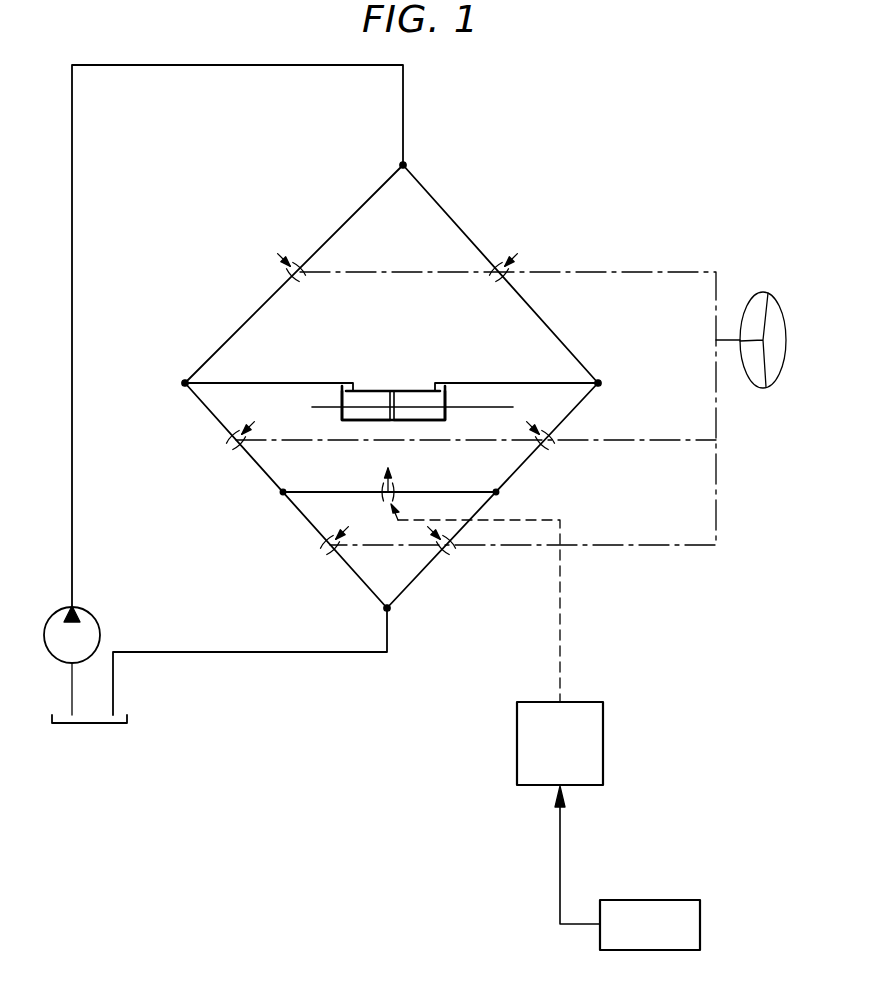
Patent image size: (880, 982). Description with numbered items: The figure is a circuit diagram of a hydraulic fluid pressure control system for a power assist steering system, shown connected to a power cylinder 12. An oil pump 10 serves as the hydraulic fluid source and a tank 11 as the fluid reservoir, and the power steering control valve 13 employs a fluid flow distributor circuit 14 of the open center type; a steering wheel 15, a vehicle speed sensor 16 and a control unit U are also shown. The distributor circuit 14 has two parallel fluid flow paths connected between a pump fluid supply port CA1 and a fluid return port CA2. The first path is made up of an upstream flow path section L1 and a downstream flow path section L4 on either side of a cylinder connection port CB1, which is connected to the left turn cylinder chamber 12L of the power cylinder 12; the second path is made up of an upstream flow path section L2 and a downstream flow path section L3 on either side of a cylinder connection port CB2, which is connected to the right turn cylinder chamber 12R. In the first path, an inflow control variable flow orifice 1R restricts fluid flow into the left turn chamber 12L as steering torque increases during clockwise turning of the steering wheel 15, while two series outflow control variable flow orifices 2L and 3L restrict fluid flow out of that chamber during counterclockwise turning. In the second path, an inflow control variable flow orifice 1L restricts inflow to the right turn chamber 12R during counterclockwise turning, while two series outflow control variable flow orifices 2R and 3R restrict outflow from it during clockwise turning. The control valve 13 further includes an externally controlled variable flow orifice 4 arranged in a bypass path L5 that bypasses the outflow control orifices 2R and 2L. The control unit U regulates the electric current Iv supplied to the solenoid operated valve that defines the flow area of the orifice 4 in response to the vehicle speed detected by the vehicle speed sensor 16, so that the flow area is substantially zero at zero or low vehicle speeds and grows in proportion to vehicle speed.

The oil pump 10 is at (98, 628).
The tank 11 is at (128, 718).
The power cylinder 12 is at (390, 390).
The left turn cylinder chamber 12L is at (340, 419).
The right turn cylinder chamber 12R is at (445, 417).
The power steering control valve 13 is at (253, 300).
The fluid flow distributor circuit 14 is at (468, 232).
The steering wheel 15 is at (759, 389).
The vehicle speed sensor 16 is at (645, 900).
The inflow control variable flow orifice of the first kind 1R is at (292, 254).
The inflow control variable flow orifice of the second kind 1L is at (504, 256).
The outflow control variable flow orifice 2L is at (330, 559).
The outflow control variable flow orifice 2R is at (449, 556).
The outflow control variable flow orifice 3L is at (237, 453).
The outflow control variable flow orifice 3R is at (550, 452).
The externally controlled variable flow orifice 4 is at (396, 484).
The upstream flow path section L1 is at (373, 196).
The upstream flow path section L2 is at (438, 202).
The downstream flow path section L3 is at (580, 405).
The downstream flow path section L4 is at (209, 412).
The bypass path L5 is at (433, 492).
The pump fluid supply port CA1 is at (406, 163).
The fluid return port CA2 is at (391, 610).
The cylinder connection port CB1 is at (183, 383).
The cylinder connection port CB2 is at (602, 383).
The control unit U is at (605, 748).
The control current Iv is at (485, 603).